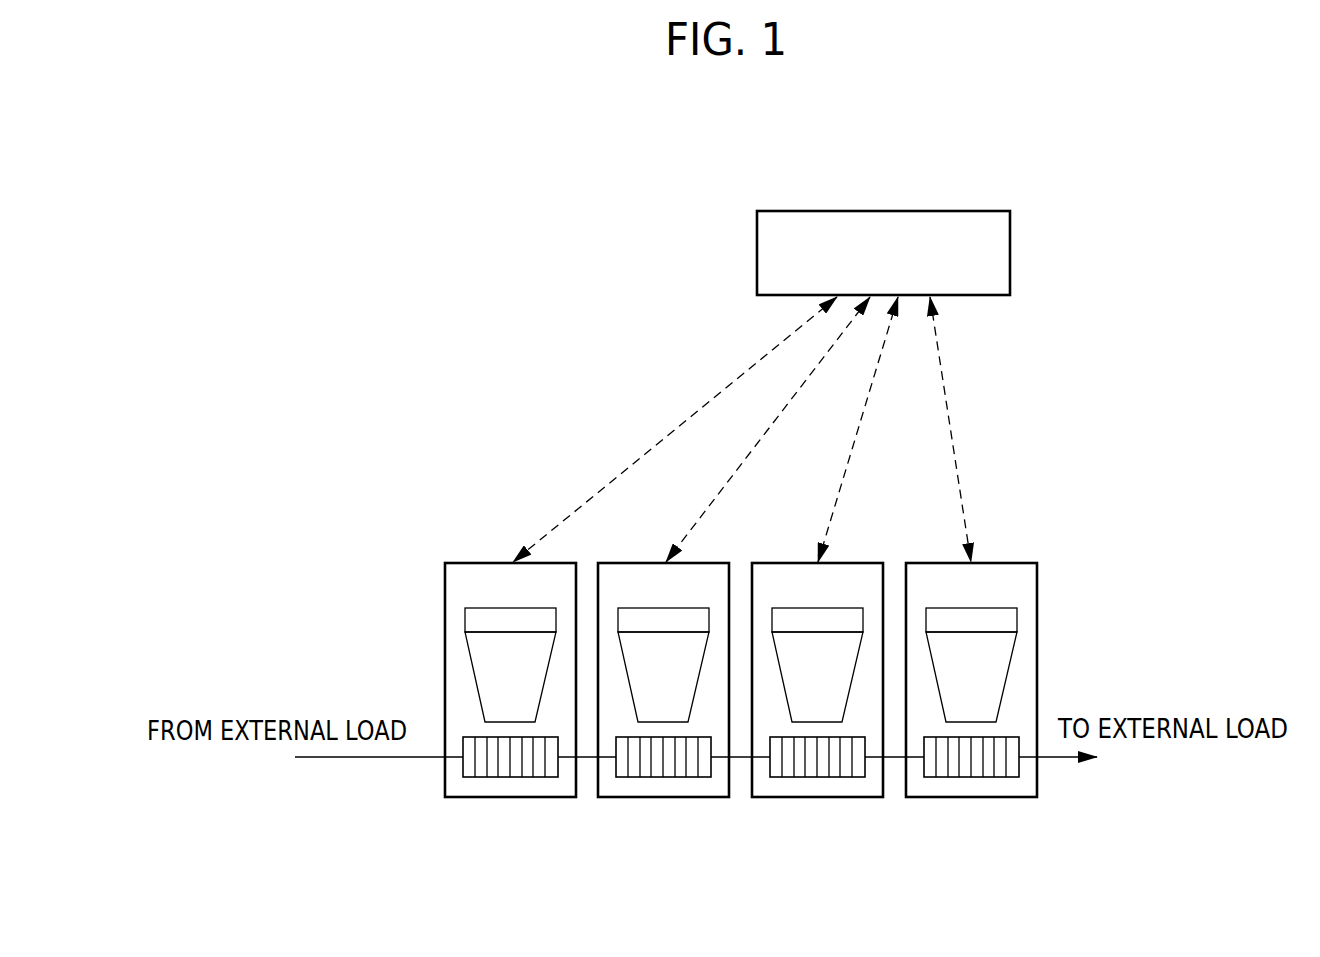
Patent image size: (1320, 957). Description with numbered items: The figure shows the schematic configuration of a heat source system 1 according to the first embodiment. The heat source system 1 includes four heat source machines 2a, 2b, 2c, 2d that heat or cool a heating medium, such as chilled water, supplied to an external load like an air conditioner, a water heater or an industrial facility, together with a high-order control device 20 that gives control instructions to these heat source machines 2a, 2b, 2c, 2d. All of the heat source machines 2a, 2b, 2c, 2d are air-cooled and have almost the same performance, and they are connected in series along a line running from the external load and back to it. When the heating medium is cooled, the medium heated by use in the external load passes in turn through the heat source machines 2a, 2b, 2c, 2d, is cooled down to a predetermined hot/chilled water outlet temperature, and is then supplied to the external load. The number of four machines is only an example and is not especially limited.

The heat source system 1 is at (1070, 90).
The high-order control device 20 is at (880, 210).
The heat source machine 2a is at (483, 562).
The heat source machine 2b is at (640, 562).
The heat source machine 2c is at (789, 562).
The heat source machine 2d is at (1000, 562).